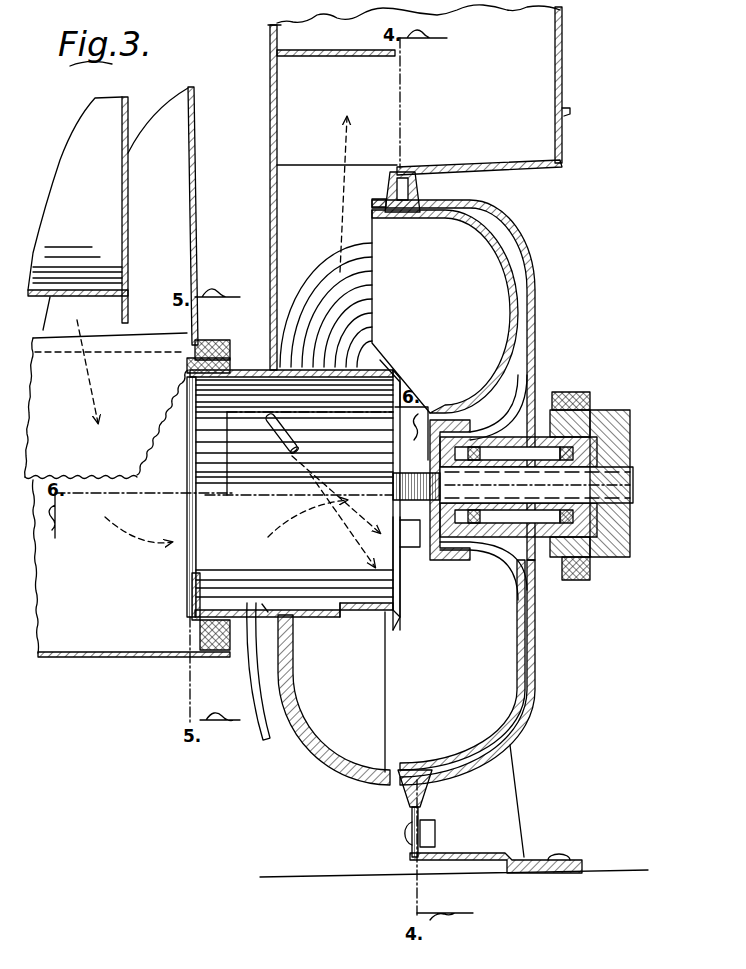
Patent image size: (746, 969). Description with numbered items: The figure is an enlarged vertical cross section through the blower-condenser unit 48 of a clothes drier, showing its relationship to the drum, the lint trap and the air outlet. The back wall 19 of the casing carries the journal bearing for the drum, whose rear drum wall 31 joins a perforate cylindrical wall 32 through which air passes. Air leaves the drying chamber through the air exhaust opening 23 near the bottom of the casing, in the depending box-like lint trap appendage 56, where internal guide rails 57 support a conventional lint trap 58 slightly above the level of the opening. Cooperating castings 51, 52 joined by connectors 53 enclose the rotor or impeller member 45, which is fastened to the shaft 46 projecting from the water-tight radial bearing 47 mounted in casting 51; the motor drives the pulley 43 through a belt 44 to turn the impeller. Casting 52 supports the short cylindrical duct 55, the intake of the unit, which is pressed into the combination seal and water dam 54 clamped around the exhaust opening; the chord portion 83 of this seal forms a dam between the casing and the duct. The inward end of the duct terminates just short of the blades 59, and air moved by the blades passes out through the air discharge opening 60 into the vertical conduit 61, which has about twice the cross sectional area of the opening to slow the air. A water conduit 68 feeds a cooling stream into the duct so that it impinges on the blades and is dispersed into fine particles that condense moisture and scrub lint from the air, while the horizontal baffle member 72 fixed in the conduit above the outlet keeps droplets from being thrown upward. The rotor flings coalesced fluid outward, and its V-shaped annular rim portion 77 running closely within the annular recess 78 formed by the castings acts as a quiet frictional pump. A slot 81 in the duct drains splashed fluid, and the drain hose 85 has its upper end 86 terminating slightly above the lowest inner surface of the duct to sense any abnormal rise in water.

The back wall 19 is at (197, 152).
The air exhaust opening 23 is at (190, 557).
The rear drum wall 31 is at (122, 195).
The perforate cylindrical wall 32 is at (47, 297).
The pulley 43 is at (632, 437).
The belt 44 is at (572, 394).
The rotor or impeller member 45 is at (388, 678).
The shaft 46 is at (640, 478).
The radial bearing 47 is at (522, 466).
The blower-condenser unit 48 is at (545, 270).
The casting 51 is at (540, 660).
The casting 52 is at (320, 760).
The connectors 53 is at (403, 833).
The combination seal and water dam 54 is at (222, 350).
The short cylindrical duct 55 is at (295, 555).
The lint trap appendage 56 is at (68, 662).
The internal guide rails 57 is at (110, 352).
The lint trap 58 is at (140, 470).
The blades 59 is at (438, 262).
The air discharge opening 60 is at (330, 175).
The vertical conduit 61 is at (570, 60).
The water conduit 68 is at (290, 452).
The horizontal baffle member 72 is at (340, 57).
The annular rim portion 77 is at (422, 206).
The annular recess 78 is at (417, 193).
The slot 81 is at (366, 606).
The chord portion 83 is at (192, 590).
The drain hose 85 is at (250, 688).
The upper end 86 is at (262, 604).